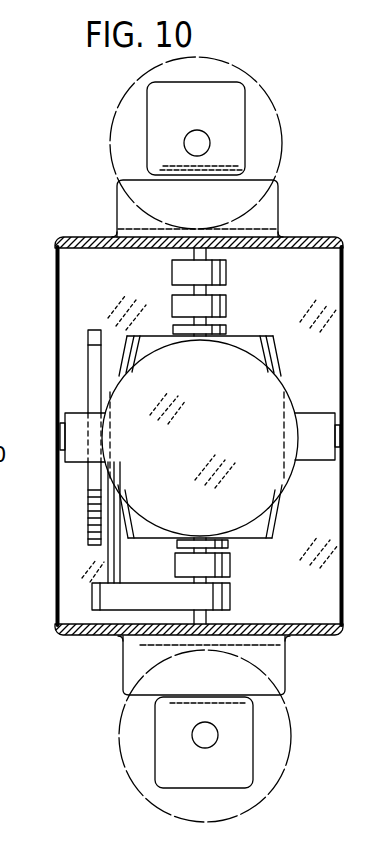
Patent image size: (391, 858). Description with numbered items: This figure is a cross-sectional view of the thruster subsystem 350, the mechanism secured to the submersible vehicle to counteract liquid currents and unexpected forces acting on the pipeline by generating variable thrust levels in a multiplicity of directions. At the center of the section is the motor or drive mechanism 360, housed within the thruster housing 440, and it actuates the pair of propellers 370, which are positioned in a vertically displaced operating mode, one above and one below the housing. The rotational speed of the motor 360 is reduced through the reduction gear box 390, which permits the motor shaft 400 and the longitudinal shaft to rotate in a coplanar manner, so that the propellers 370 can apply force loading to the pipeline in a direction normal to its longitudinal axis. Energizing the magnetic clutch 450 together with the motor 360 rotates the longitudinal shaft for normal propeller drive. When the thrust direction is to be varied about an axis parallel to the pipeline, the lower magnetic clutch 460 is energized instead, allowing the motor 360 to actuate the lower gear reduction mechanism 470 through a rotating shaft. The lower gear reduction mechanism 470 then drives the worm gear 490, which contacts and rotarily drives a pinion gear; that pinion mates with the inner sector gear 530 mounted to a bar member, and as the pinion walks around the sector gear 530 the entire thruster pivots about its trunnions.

The thruster subsystem 350 is at (86, 181).
The motor or drive mechanism 360 is at (152, 346).
The propeller 370 is at (300, 100).
The reduction gear box 390 is at (226, 279).
The motor shaft 400 is at (207, 320).
The thruster housing 440 is at (58, 542).
The magnetic clutch 450 is at (240, 289).
The lower magnetic clutch 460 is at (231, 563).
The lower gear reduction mechanism 470 is at (230, 607).
The worm gear 490 is at (118, 584).
The inner sector gear 530 is at (88, 340).